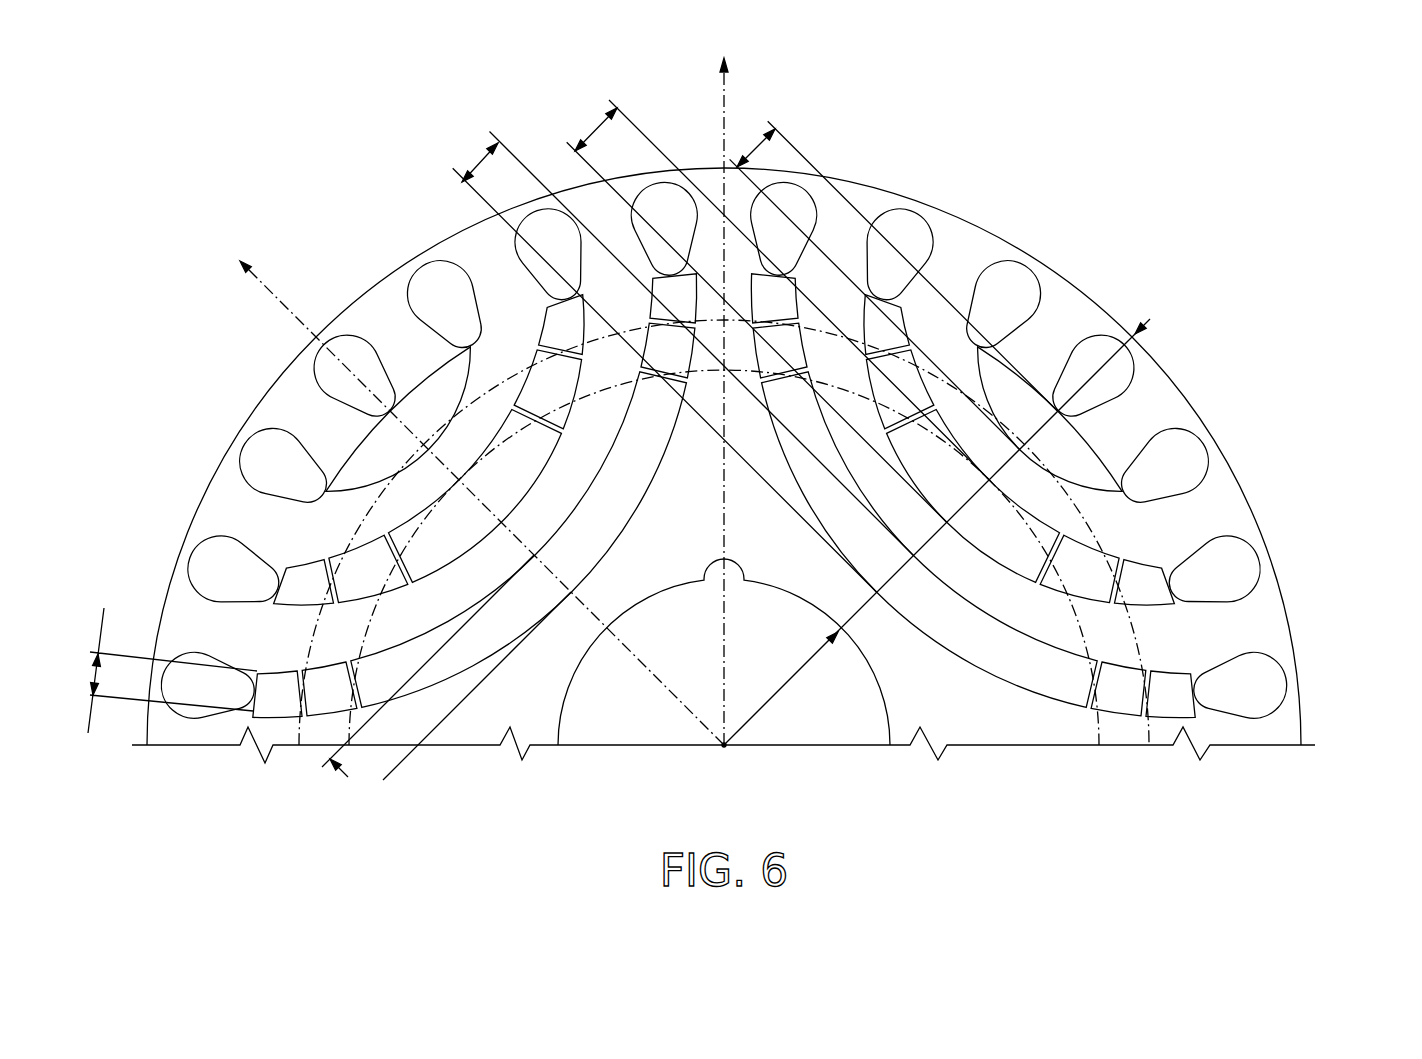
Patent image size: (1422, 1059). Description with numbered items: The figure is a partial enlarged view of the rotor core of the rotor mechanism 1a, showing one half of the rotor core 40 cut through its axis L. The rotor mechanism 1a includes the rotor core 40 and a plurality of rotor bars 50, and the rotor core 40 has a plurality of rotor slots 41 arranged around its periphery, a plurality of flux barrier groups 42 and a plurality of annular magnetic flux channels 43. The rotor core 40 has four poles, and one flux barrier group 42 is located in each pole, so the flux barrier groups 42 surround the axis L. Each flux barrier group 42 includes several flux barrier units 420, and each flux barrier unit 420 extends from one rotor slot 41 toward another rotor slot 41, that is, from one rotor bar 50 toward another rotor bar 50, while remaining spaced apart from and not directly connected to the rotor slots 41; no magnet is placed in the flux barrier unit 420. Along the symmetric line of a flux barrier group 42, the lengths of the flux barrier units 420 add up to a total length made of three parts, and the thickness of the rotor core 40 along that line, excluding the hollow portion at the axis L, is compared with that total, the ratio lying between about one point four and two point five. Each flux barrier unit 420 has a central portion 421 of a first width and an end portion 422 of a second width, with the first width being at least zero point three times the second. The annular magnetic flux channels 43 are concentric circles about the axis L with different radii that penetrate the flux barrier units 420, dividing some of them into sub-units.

The rotor mechanism 1a is at (203, 83).
The rotor core 40 is at (1047, 262).
The rotor slot 41 is at (1252, 704).
The flux barrier group 42 is at (1356, 440).
The flux barrier unit 420 is at (803, 548).
The central portion 421 is at (586, 592).
The end portion 422 is at (278, 722).
The annular magnetic flux channel 43 is at (460, 457).
The rotor bar 50 is at (1262, 672).